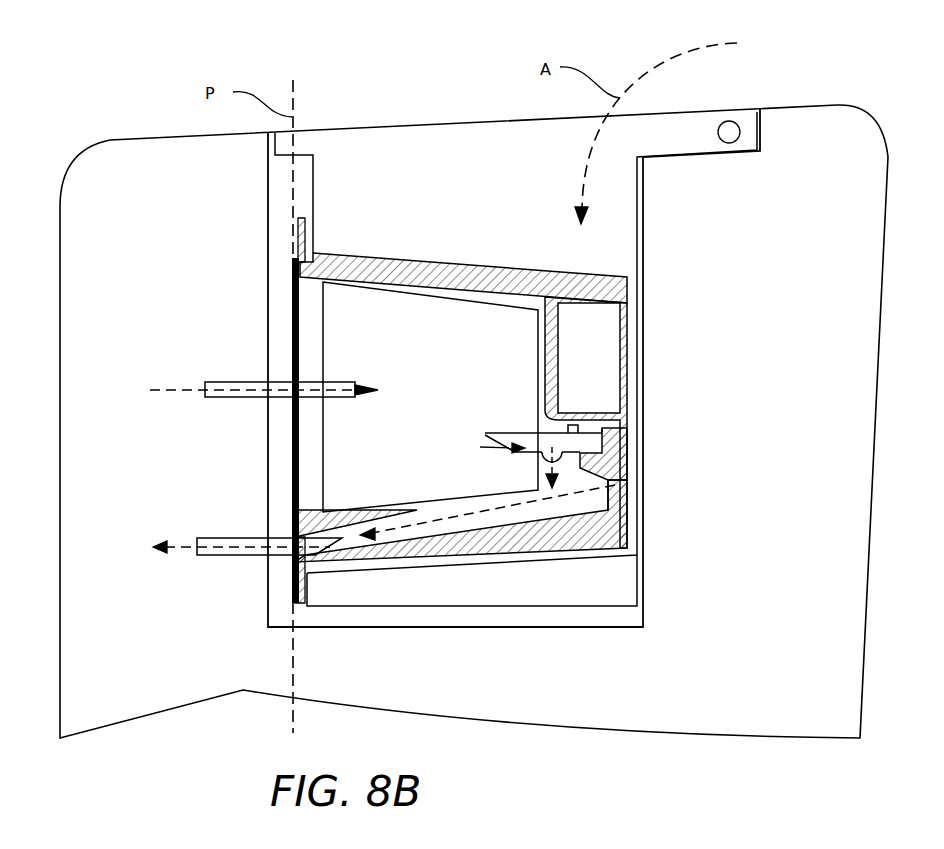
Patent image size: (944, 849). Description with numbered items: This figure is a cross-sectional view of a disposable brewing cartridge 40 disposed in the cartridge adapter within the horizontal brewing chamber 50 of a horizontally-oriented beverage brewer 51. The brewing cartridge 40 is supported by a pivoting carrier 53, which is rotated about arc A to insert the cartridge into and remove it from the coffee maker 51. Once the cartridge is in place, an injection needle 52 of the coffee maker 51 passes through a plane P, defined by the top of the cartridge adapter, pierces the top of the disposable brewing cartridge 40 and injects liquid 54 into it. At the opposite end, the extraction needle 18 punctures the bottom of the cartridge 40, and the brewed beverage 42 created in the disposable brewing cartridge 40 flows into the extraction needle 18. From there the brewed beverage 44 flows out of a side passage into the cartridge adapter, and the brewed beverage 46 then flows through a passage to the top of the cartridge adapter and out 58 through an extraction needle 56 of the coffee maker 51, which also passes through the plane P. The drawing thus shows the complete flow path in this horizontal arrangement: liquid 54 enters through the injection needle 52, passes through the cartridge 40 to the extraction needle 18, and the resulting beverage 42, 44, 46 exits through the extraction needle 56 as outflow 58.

The beverage brewer 51 is at (99, 111).
The horizontal brewing chamber 50 is at (266, 300).
The pivoting carrier 53 is at (516, 359).
The disposable brewing cartridge 40 is at (430, 397).
The extraction needle 18 is at (523, 437).
The brewed beverage 42 is at (478, 446).
The brewed beverage 44 is at (610, 501).
The brewed beverage 46 is at (490, 512).
The injection needle 52 is at (238, 382).
The liquid 54 is at (182, 392).
The extraction needle 56 is at (240, 538).
The brewed beverage outflow 58 is at (178, 548).